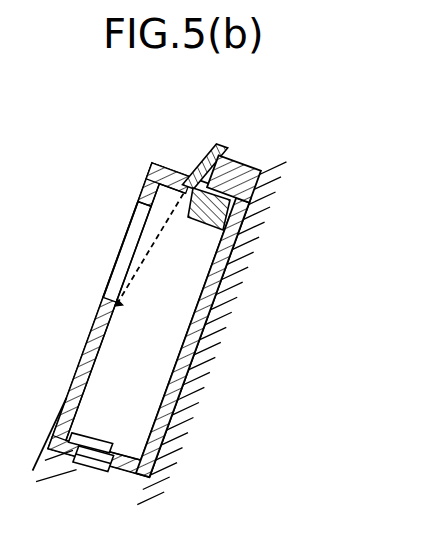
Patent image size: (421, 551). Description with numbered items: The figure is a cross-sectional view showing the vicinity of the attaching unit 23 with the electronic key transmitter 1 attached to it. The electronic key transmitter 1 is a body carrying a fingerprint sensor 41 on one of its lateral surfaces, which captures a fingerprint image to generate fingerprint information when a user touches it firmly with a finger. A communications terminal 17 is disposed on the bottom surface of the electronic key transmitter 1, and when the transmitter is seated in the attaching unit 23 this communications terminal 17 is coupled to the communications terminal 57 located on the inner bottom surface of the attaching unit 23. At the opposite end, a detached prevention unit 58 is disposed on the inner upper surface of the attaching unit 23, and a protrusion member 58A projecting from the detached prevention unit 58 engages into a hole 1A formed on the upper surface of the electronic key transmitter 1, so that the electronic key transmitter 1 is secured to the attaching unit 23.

The electronic key transmitter 1 is at (84, 350).
The hole 1A is at (235, 250).
The fingerprint sensor 41 is at (117, 256).
The communications terminal 17 is at (104, 446).
The communications terminal 57 is at (89, 470).
The detached prevention unit 58 is at (249, 168).
The protrusion member 58A is at (246, 214).
The attaching unit 23 is at (226, 375).